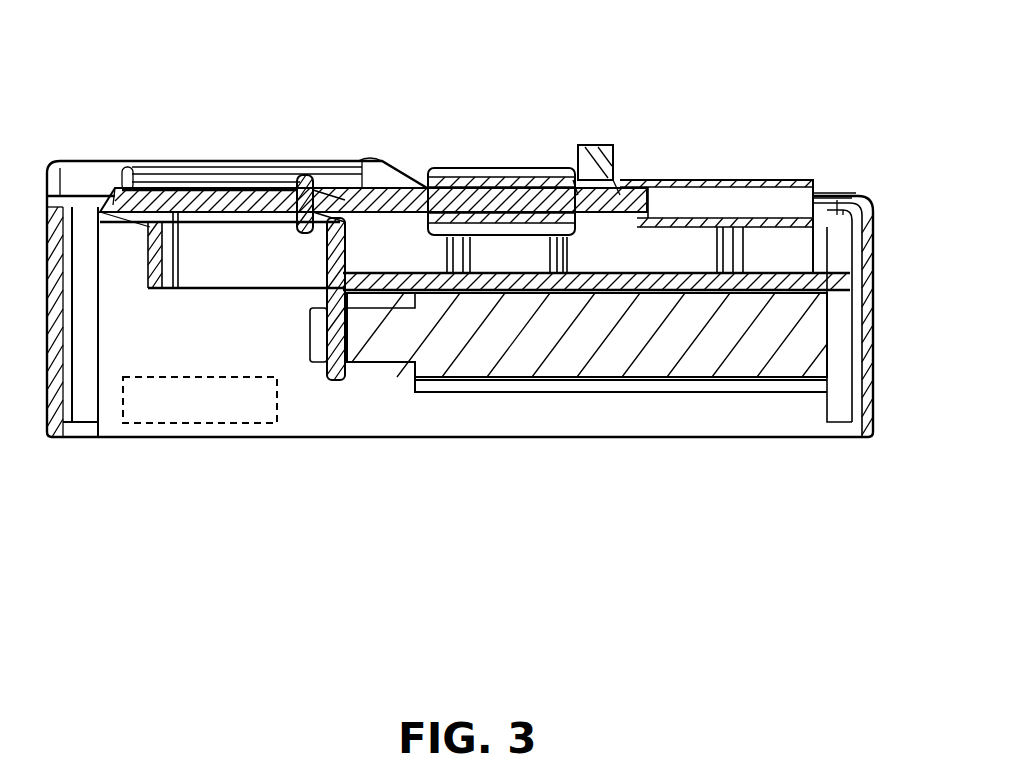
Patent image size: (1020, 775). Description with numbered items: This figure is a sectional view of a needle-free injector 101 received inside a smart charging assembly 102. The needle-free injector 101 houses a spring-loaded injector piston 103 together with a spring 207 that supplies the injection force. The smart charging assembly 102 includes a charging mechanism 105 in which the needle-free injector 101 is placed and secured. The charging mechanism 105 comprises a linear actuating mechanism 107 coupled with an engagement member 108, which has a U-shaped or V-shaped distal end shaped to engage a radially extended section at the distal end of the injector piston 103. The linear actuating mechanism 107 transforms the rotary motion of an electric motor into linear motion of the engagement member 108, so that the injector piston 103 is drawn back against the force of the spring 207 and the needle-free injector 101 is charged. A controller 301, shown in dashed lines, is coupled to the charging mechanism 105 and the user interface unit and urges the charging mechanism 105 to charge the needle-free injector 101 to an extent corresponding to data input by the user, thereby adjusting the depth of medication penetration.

The needle-free injector 101 is at (693, 155).
The smart charging assembly 102 is at (147, 468).
The injector piston 103 is at (378, 200).
The charging mechanism 105 is at (368, 413).
The linear actuating mechanism 107 is at (457, 365).
The engagement member 108 is at (345, 296).
The spring 207 is at (468, 170).
The controller 301 is at (288, 180).